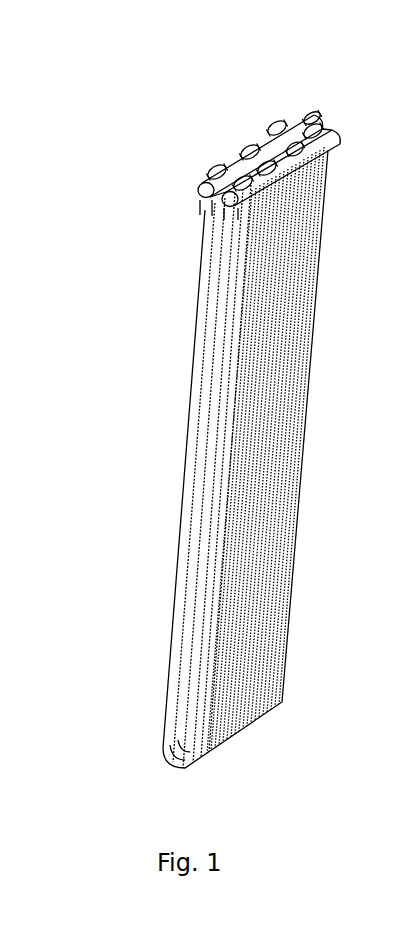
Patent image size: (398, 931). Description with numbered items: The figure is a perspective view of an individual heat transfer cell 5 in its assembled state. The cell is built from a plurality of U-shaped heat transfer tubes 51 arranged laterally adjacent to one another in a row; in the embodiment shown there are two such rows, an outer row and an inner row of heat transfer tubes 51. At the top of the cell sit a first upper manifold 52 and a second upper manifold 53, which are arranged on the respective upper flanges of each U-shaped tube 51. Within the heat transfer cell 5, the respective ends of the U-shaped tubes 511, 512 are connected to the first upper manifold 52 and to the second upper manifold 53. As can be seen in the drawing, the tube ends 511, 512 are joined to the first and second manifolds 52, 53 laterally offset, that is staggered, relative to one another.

The heat transfer cell 5 is at (150, 557).
The U-shaped heat transfer tube 51 is at (193, 482).
The first end of U-shaped tube 511 is at (240, 220).
The second end of U-shaped tube 512 is at (210, 215).
The first upper manifold 52 is at (302, 126).
The second upper manifold 53 is at (242, 152).